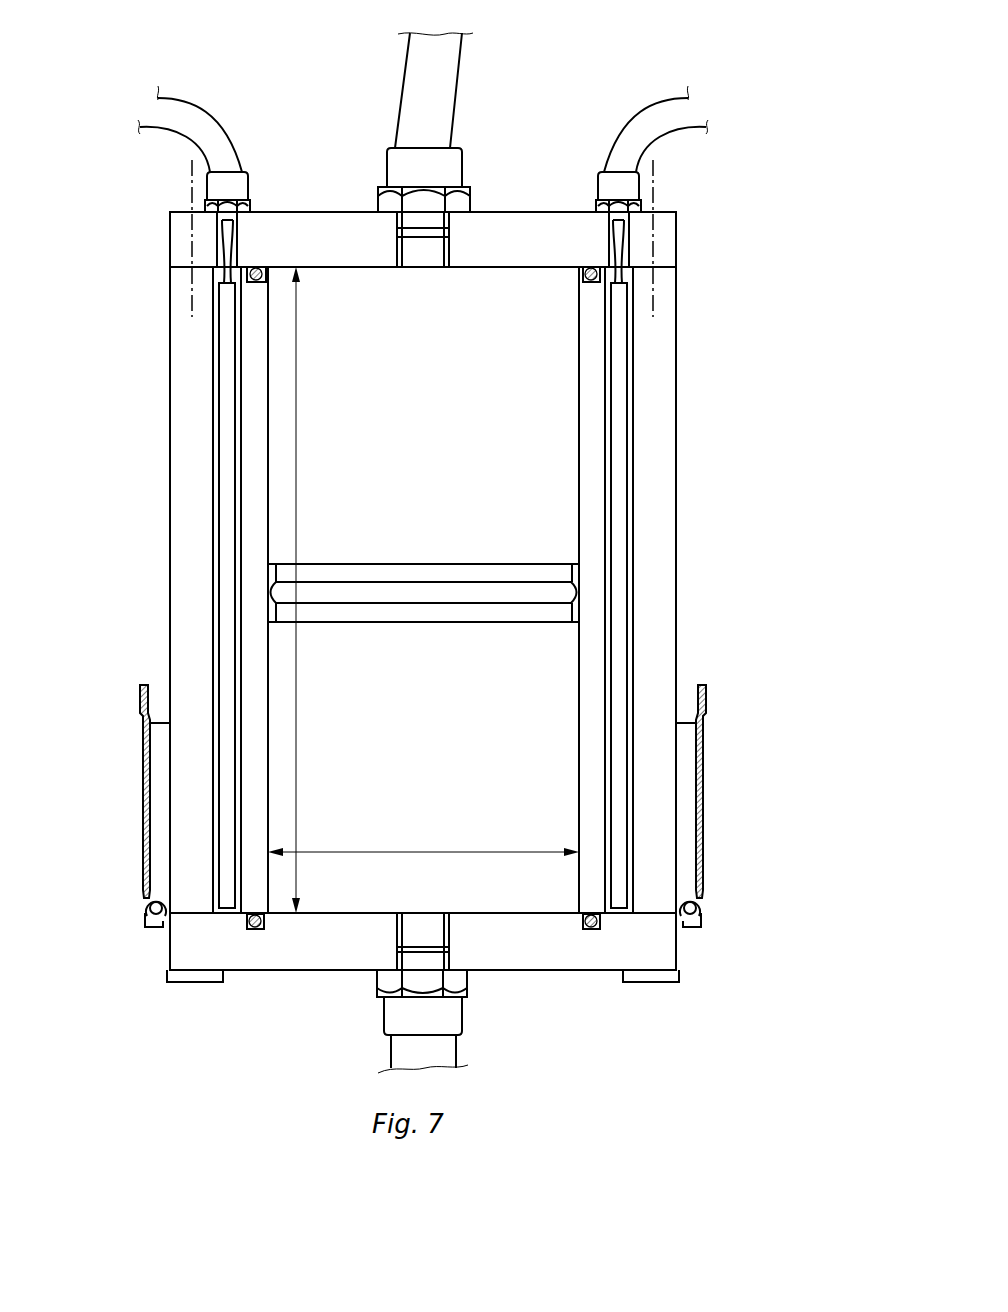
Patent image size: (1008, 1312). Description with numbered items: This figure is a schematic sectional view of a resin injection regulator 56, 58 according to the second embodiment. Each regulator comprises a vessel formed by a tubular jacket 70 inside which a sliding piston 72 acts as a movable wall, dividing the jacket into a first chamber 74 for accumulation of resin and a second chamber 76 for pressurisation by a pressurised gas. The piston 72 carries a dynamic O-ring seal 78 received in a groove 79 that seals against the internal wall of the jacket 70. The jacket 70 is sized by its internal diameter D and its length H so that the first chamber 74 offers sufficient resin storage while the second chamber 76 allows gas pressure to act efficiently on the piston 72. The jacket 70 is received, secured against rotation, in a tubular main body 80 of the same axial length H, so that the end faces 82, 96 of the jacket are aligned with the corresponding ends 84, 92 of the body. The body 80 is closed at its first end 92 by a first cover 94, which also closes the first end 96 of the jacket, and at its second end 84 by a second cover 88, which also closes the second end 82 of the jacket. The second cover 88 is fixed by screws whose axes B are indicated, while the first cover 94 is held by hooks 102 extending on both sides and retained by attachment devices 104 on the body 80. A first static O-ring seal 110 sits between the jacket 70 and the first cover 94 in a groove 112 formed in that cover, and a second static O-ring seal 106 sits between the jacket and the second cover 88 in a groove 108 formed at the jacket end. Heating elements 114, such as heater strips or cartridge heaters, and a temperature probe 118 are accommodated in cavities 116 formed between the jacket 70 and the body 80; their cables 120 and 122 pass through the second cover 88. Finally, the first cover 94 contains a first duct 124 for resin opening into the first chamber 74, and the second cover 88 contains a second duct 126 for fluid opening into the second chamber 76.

The injection regulator 56 is at (762, 371).
The injection regulator 58 is at (775, 360).
The tubular jacket 70 is at (598, 593).
The sliding piston 72 is at (562, 573).
The first chamber 74 is at (423, 767).
The second chamber 76 is at (423, 415).
The O-ring seal 78 is at (460, 594).
The groove 79 is at (498, 582).
The tubular main body 80 is at (650, 642).
The second end of the jacket 82 is at (578, 270).
The second end of the main body 84 is at (665, 268).
The second cover 88 is at (678, 235).
The first end of the main body 92 is at (190, 906).
The first cover 94 is at (642, 940).
The first end of the jacket 96 is at (256, 914).
The hooks 102 is at (148, 908).
The attachment devices 104 is at (682, 760).
The second static sealing means 106 is at (590, 283).
The groove 108 is at (262, 272).
The first static sealing means 110 is at (258, 929).
The groove 112 is at (277, 929).
The heating element 114 is at (226, 822).
The cavities 116 is at (615, 918).
The probe 118 is at (620, 822).
The cable 120 is at (195, 122).
The cable 122 is at (640, 135).
The first duct 124 is at (440, 1058).
The second duct 126 is at (432, 85).
The screw axes B is at (190, 193).
The axial length H is at (308, 590).
The internal diameter D is at (423, 838).